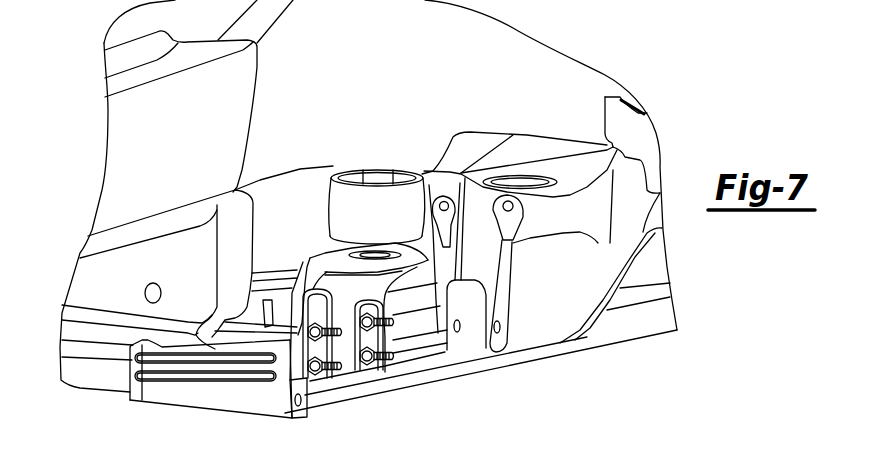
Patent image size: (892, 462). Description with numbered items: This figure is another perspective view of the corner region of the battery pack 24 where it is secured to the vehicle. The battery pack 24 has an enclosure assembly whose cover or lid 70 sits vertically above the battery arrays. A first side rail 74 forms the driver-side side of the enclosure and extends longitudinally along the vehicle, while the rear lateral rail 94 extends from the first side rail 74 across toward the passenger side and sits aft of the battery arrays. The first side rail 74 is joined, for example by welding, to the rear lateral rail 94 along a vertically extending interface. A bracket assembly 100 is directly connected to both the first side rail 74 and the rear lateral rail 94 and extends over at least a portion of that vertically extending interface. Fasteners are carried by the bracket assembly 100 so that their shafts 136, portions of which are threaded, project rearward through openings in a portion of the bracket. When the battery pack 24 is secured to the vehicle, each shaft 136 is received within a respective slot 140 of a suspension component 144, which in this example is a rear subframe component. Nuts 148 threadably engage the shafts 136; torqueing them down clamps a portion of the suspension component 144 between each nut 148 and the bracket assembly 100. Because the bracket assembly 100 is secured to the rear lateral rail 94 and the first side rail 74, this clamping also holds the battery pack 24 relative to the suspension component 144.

The battery pack 24 is at (628, 355).
The cover or lid 70 is at (313, 192).
The first side rail 74 is at (103, 368).
The rear lateral rail 94 is at (493, 358).
The bracket assembly 100 is at (173, 390).
The shafts 136 is at (323, 380).
The slot 140 is at (345, 350).
The suspension component 144 is at (387, 293).
The nuts 148 is at (326, 332).